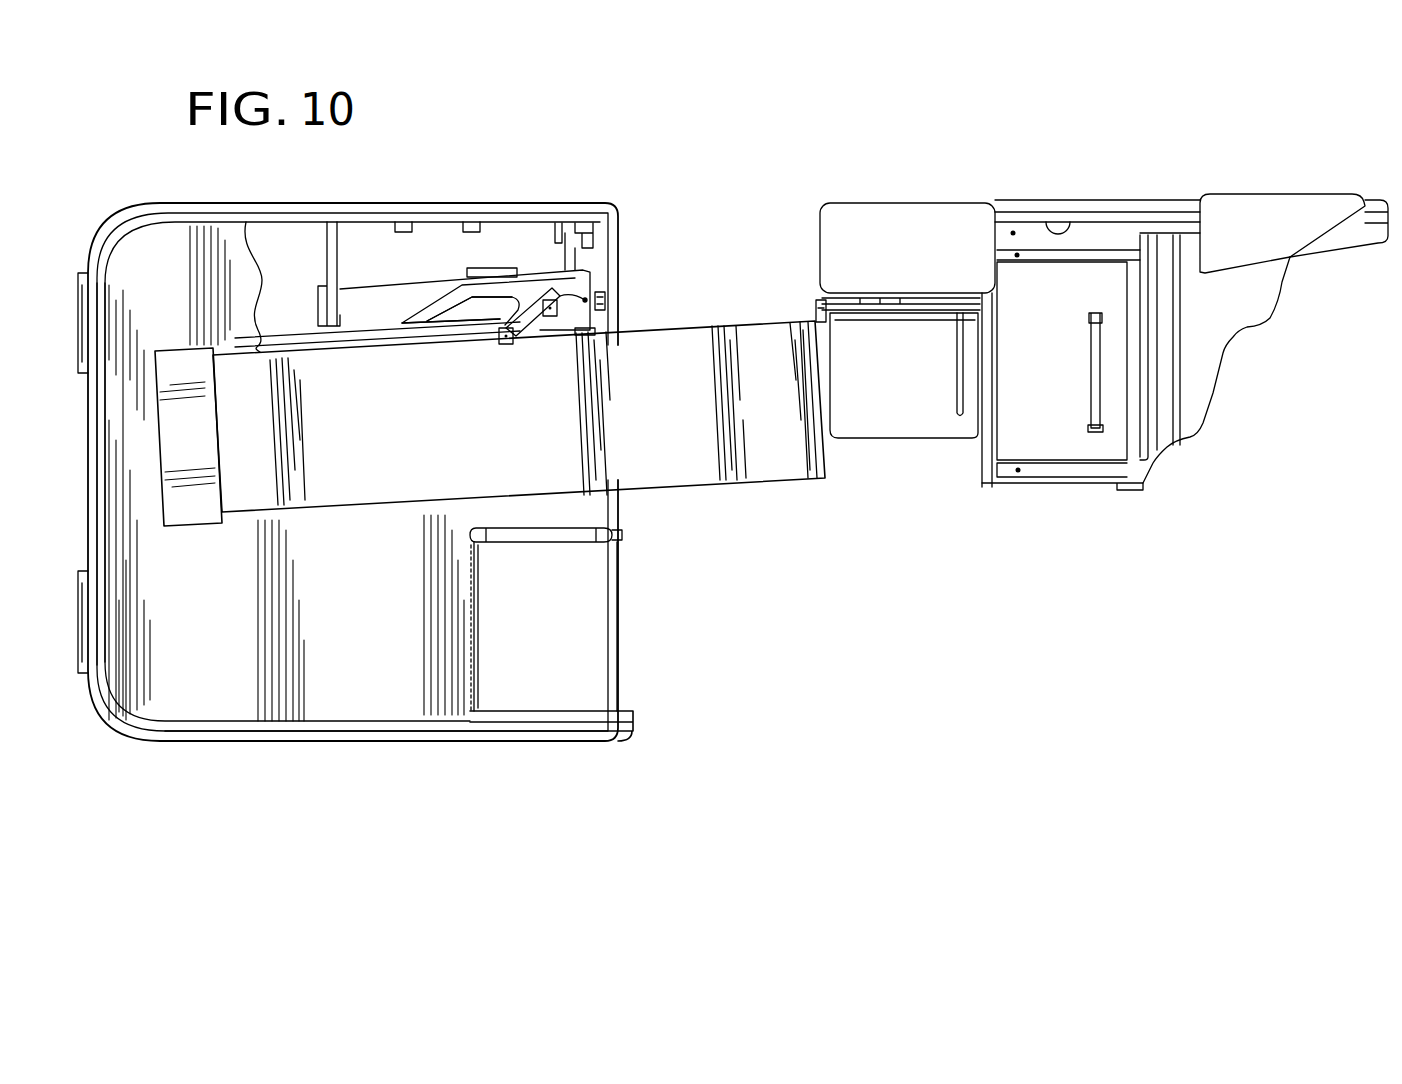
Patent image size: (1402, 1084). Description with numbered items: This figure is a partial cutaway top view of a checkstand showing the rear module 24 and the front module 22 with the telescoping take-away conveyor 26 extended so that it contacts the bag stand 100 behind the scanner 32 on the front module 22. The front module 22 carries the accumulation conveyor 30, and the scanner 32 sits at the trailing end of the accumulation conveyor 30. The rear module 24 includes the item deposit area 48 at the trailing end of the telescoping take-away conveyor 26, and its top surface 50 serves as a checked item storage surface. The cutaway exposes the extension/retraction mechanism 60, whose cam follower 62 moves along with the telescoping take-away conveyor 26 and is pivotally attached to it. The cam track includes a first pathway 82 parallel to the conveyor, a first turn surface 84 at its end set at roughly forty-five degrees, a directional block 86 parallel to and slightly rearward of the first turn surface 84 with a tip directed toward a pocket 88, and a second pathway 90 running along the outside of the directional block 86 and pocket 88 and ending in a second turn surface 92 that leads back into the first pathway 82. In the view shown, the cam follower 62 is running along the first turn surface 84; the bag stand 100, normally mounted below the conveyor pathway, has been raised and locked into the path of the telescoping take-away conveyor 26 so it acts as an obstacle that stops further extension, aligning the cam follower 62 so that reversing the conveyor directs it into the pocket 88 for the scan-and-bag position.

The front module 22 is at (1130, 503).
The rear module 24 is at (398, 757).
The telescoping take-away conveyor 26 is at (372, 452).
The accumulation conveyor 30 is at (1234, 312).
The scanner 32 is at (1057, 329).
The item deposit area 48 is at (146, 454).
The top surface 50 is at (372, 622).
The extension/retraction mechanism 60 is at (625, 252).
The cam follower 62 is at (552, 312).
The first pathway 82 is at (480, 338).
The first turn surface 84 is at (586, 300).
The directional block 86 is at (545, 290).
The pocket 88 is at (505, 345).
The second pathway 90 is at (500, 290).
The second turn surface 92 is at (450, 300).
The bag stand 100 is at (818, 305).